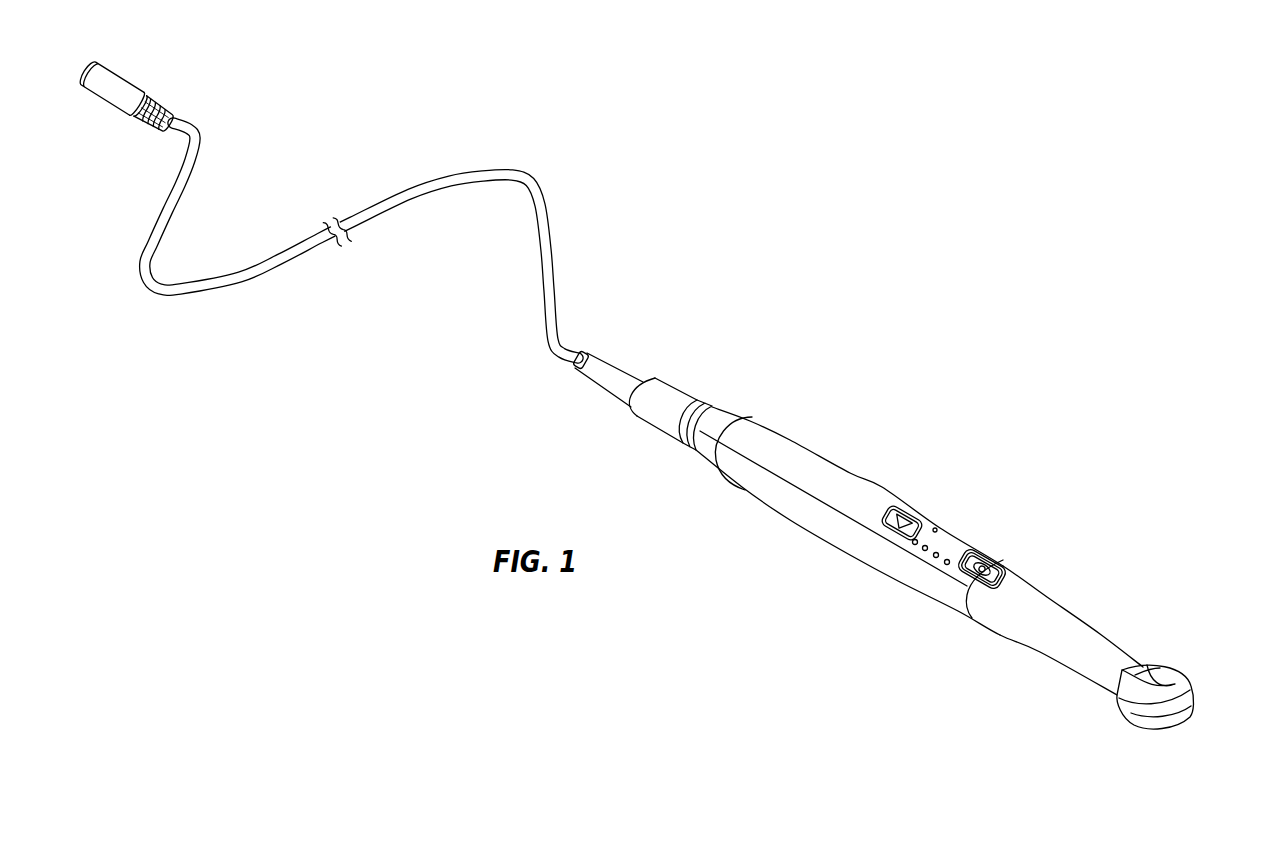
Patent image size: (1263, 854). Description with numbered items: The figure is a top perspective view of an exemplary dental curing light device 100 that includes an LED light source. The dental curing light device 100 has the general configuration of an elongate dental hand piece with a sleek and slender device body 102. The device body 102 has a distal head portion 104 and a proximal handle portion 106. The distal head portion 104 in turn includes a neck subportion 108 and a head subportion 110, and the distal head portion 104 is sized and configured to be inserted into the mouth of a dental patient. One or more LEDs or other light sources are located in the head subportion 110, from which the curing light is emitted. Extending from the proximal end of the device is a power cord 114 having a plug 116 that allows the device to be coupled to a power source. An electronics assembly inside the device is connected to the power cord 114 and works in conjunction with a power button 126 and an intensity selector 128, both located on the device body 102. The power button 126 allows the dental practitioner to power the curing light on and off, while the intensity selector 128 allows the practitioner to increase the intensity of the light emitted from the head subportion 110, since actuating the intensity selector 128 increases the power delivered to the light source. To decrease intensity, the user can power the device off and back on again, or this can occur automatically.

The dental curing light device 100 is at (960, 200).
The device body 102 is at (900, 545).
The distal head portion 104 is at (1165, 740).
The proximal handle portion 106 is at (937, 638).
The neck subportion 108 is at (1070, 608).
The head subportion 110 is at (1178, 678).
The power cord 114 is at (525, 173).
The plug 116 is at (127, 77).
The power button 126 is at (1003, 563).
The intensity selector 128 is at (923, 518).